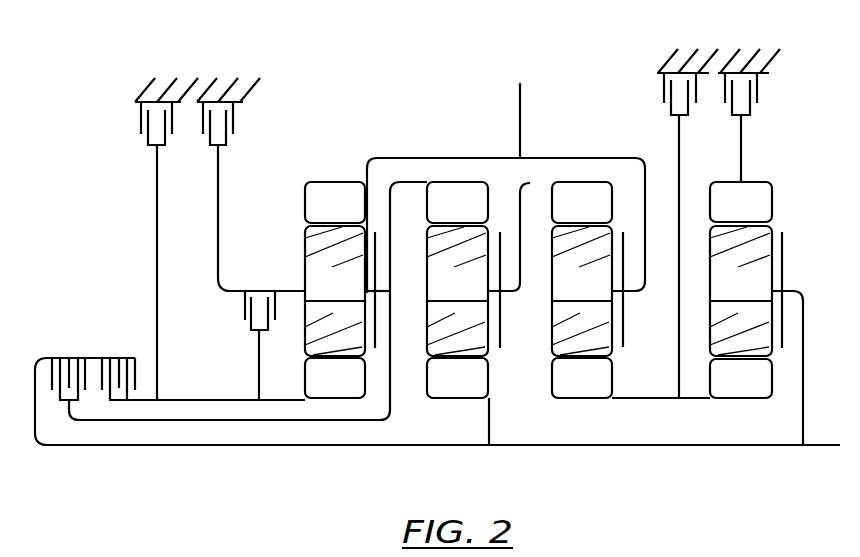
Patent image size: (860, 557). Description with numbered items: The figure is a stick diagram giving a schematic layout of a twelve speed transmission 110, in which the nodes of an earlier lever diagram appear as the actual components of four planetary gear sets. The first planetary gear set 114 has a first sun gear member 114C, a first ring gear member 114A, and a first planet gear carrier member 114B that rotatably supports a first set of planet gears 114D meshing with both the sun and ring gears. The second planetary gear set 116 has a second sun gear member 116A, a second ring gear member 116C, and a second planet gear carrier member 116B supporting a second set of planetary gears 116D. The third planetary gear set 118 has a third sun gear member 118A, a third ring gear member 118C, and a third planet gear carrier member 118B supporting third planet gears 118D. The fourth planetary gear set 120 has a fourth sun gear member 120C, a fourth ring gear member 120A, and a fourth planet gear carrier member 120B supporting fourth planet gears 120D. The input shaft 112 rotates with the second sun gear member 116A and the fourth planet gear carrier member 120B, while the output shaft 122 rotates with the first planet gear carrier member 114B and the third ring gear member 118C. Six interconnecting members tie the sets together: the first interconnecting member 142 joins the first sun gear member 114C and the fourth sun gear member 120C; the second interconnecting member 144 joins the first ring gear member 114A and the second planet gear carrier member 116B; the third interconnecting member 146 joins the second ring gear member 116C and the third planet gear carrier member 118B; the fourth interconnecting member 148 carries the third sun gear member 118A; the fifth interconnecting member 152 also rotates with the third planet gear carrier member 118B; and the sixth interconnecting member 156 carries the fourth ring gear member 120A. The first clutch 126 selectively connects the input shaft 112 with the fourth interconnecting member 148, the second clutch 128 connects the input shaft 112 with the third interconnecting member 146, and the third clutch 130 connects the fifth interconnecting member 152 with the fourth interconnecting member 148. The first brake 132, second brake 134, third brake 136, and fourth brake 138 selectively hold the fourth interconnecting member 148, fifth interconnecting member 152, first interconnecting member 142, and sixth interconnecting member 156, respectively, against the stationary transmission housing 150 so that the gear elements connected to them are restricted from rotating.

The twelve speed transmission 110 is at (92, 66).
The input shaft 112 is at (815, 447).
The first planetary gear set 114 is at (610, 340).
The first ring gear member 114A is at (608, 217).
The first planet gear carrier member 114B is at (624, 328).
The first sun gear member 114C is at (608, 391).
The first set of planet gears 114D is at (582, 291).
The second planetary gear set 116 is at (485, 340).
The second sun gear member 116A is at (484, 391).
The second planet gear carrier member 116B is at (501, 330).
The second ring gear member 116C is at (484, 217).
The second set of planetary gears 116D is at (457, 291).
The third planetary gear set 118 is at (371, 308).
The third sun gear member 118A is at (361, 391).
The third planet gear carrier member 118B is at (376, 250).
The third ring gear member 118C is at (361, 217).
The third set of planet gears 118D is at (335, 291).
The fourth planetary gear set 120 is at (776, 340).
The fourth ring gear member 120A is at (768, 217).
The fourth planet gear carrier member 120B is at (784, 272).
The fourth sun gear member 120C is at (768, 391).
The fourth set of planet gears 120D is at (741, 291).
The output shaft 122 is at (518, 97).
The first clutch 126 is at (136, 372).
The second clutch 128 is at (85, 372).
The third clutch 130 is at (243, 308).
The first brake 132 is at (140, 125).
The second brake 134 is at (235, 125).
The third brake 136 is at (662, 88).
The fourth brake 138 is at (757, 97).
The first shaft or interconnecting member 142 is at (655, 400).
The second shaft or interconnecting member 144 is at (533, 190).
The third shaft or interconnecting member 146 is at (392, 360).
The fourth shaft or interconnecting member 148 is at (205, 422).
The transmission housing 150 is at (148, 83).
The fifth shaft or interconnecting member 152 is at (219, 252).
The sixth shaft or interconnecting member 156 is at (742, 148).